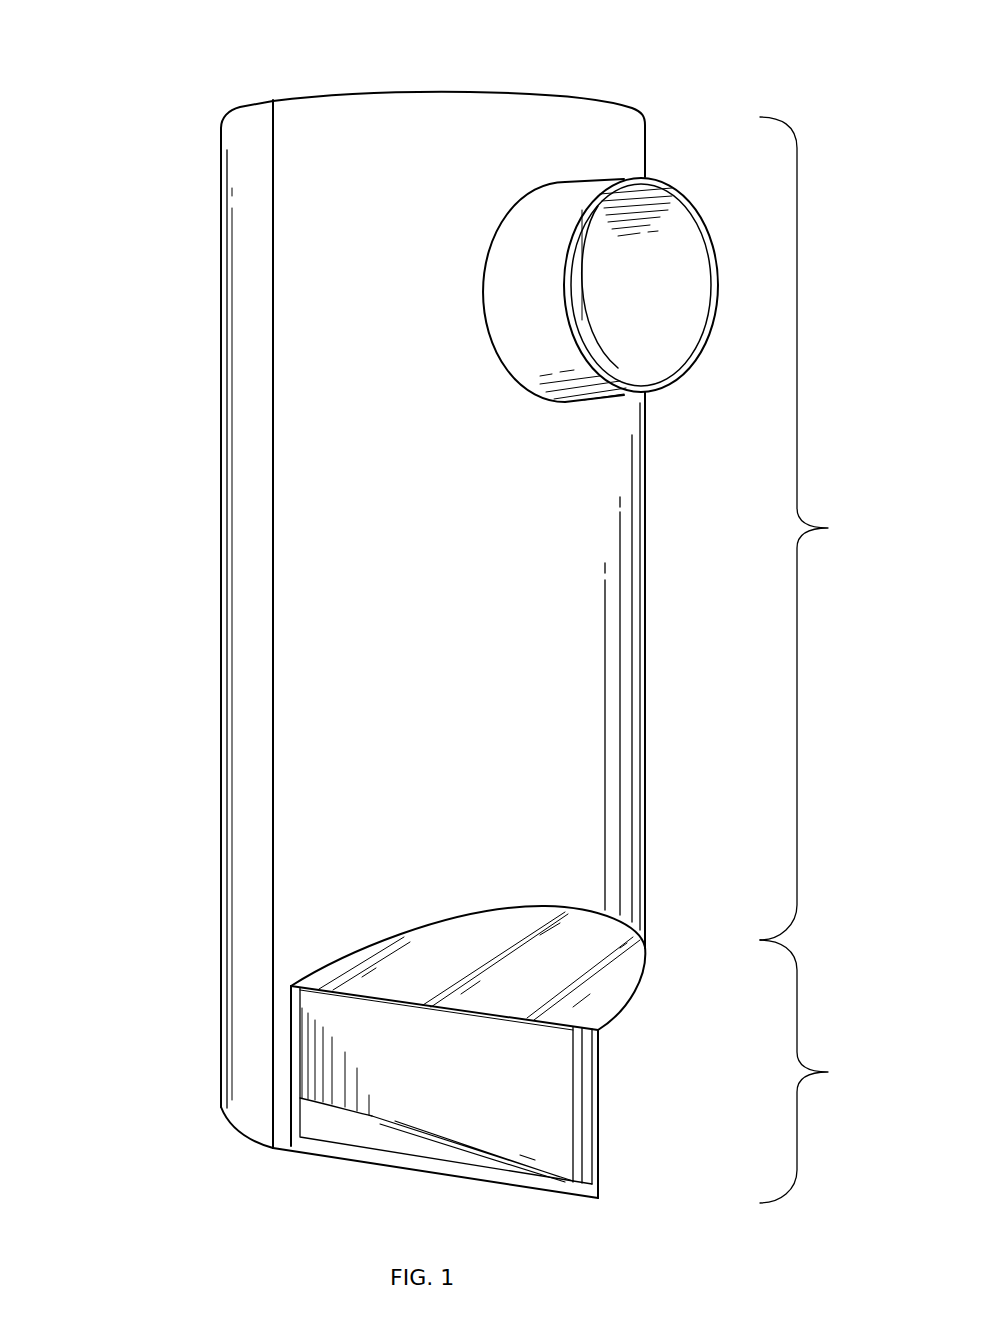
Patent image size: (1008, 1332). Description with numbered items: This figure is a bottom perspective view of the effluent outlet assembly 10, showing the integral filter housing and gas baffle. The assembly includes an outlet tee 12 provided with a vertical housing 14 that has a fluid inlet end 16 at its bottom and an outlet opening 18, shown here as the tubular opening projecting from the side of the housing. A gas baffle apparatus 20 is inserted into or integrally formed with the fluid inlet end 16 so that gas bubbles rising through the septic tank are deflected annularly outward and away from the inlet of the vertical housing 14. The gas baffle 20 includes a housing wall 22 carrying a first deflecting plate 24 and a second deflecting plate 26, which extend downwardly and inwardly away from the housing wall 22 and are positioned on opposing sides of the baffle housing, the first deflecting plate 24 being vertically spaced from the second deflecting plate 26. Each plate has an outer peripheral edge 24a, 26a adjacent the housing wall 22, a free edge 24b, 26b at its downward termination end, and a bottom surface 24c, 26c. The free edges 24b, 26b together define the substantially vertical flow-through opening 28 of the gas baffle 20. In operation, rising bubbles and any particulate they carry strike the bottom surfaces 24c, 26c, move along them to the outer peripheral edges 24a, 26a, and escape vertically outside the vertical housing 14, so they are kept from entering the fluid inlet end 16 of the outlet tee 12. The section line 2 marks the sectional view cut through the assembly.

The effluent outlet assembly 10 is at (722, 110).
The outlet tee 12 is at (811, 528).
The vertical housing 14 is at (592, 487).
The fluid inlet end 16 is at (410, 1036).
The outlet opening 18 is at (668, 252).
The gas baffle apparatus 20 is at (811, 1071).
The housing wall 22 is at (264, 1059).
The first deflecting plate 24 is at (632, 998).
The outer peripheral edge of first deflecting plate 24a is at (517, 915).
The free edge of first deflecting plate 24b is at (402, 1000).
The bottom surface of first deflecting plate 24c is at (547, 960).
The second deflecting plate 26 is at (347, 1136).
The outer peripheral edge of second deflecting plate 26a is at (386, 1124).
The free edge of second deflecting plate 26b is at (537, 1186).
The bottom surface of second deflecting plate 26c is at (236, 1130).
The flow-through opening 28 is at (573, 1128).
The section line 2- 2 is at (588, 292).